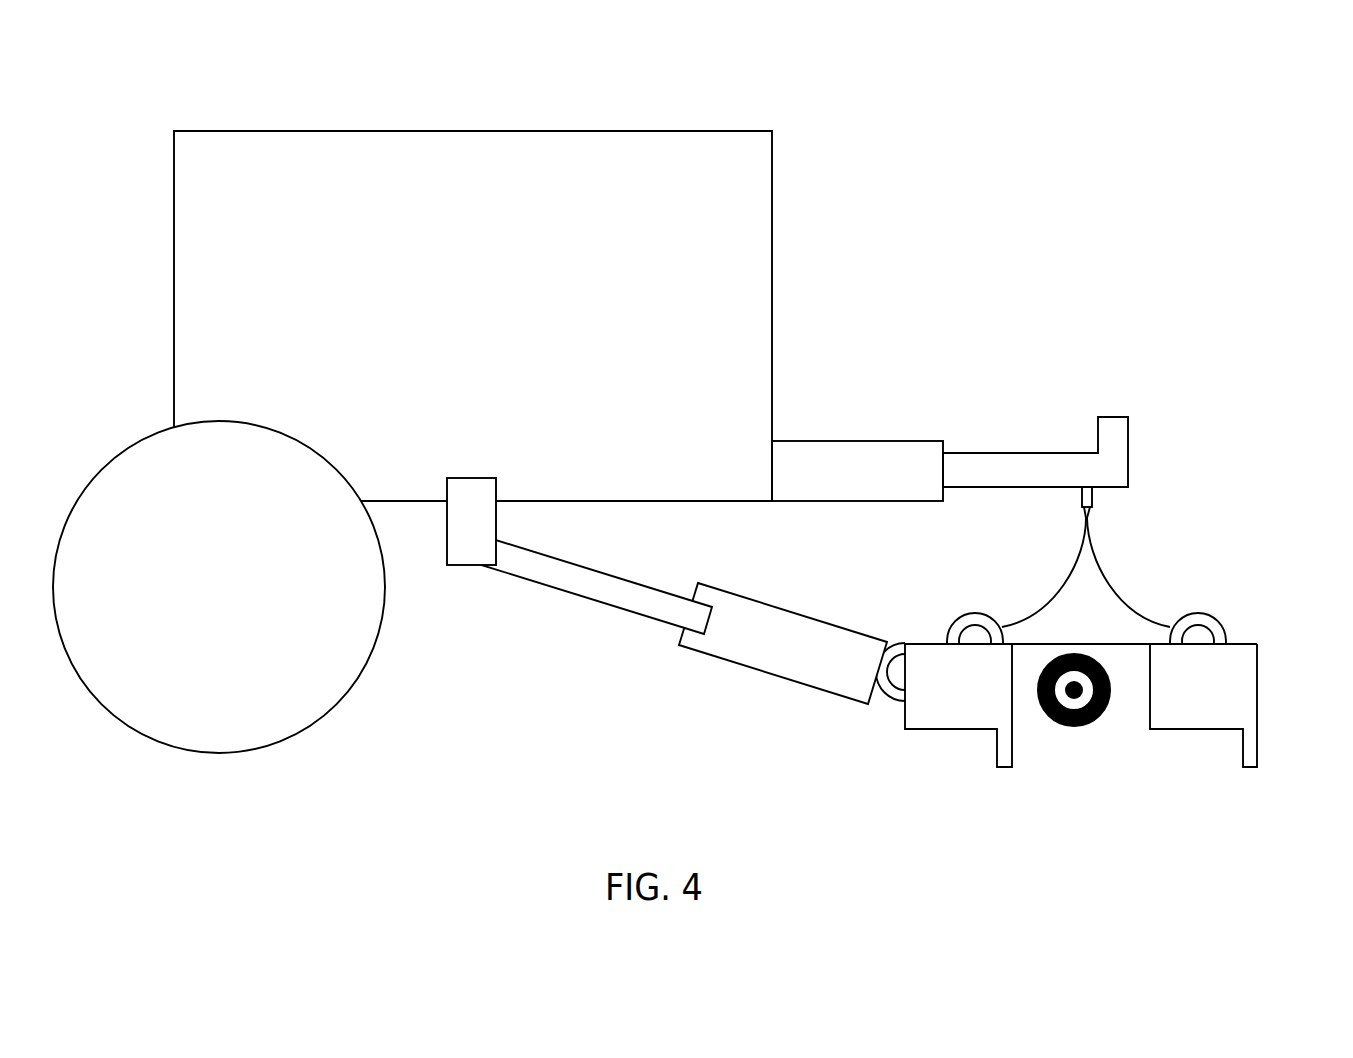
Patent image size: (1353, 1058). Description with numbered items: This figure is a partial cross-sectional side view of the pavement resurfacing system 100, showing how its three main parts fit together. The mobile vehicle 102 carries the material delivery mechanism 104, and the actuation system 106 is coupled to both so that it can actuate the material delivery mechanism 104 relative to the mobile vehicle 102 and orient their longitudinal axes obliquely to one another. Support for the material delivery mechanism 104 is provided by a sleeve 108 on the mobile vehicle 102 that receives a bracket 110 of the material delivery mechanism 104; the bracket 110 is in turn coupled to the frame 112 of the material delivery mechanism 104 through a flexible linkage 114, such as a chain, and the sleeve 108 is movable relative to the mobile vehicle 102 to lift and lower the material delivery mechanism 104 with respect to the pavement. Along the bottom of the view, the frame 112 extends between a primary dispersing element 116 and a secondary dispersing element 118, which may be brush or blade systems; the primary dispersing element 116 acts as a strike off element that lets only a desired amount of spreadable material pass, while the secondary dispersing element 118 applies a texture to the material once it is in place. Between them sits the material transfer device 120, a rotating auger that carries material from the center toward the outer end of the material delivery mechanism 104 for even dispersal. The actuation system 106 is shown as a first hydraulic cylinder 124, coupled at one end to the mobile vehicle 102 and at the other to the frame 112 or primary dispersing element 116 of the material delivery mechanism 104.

The pavement resurfacing system 100 is at (1148, 100).
The mobile vehicle 102 is at (485, 318).
The material delivery mechanism 104 is at (1258, 535).
The actuation system 106 is at (568, 642).
The sleeve 108 is at (868, 441).
The bracket 110 is at (1007, 460).
The frame 112 is at (958, 618).
The cable 114 is at (1108, 562).
The primary dispersing element 116 is at (940, 737).
The secondary dispersing element 118 is at (1208, 737).
The material transfer device 120 is at (1072, 742).
The first hydraulic cylinder 124 is at (760, 650).